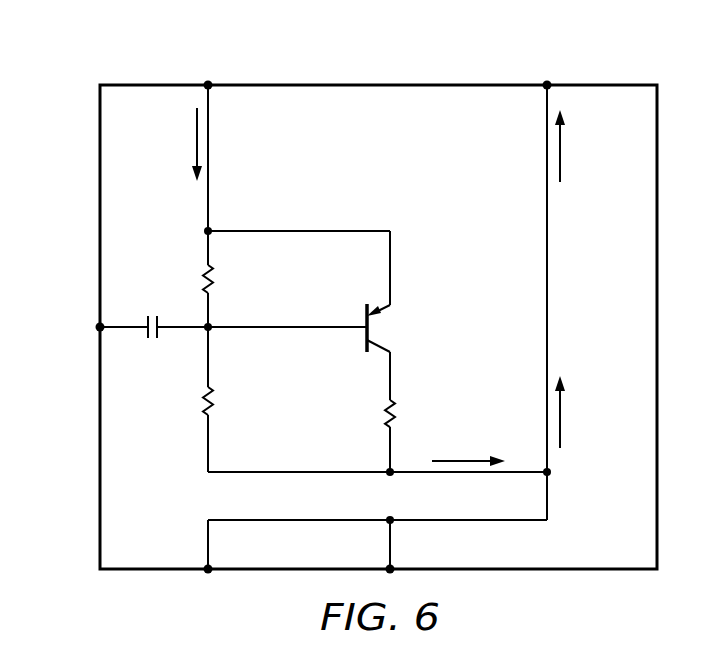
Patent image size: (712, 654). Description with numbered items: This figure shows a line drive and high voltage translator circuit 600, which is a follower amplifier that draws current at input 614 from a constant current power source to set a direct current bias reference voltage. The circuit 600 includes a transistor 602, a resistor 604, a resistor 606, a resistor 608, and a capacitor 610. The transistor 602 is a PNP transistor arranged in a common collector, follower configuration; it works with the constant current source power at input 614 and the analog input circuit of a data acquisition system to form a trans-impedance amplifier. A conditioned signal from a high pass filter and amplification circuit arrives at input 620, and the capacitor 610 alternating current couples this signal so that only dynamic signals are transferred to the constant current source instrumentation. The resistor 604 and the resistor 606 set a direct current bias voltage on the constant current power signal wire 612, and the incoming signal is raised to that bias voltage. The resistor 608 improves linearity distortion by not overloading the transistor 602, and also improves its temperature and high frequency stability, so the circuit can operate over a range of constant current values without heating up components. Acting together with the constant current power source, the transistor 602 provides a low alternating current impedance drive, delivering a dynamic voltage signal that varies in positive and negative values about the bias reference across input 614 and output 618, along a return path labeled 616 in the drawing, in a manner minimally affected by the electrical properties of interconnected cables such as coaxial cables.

The line drive and high voltage translator circuit 600 is at (363, 77).
The transistor 602 is at (362, 335).
The resistor 604 is at (203, 275).
The resistor 606 is at (202, 408).
The resistor 608 is at (386, 408).
The capacitor 610 is at (153, 340).
The constant current power signal wire 612 is at (194, 152).
The input 614 is at (206, 82).
The return path 616 is at (561, 164).
The output 618 is at (549, 82).
The input 620 is at (92, 327).